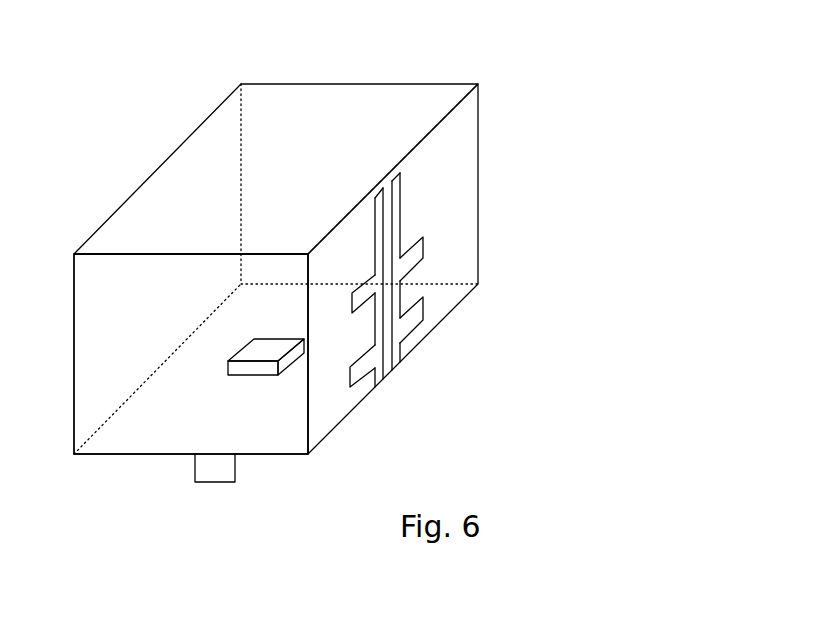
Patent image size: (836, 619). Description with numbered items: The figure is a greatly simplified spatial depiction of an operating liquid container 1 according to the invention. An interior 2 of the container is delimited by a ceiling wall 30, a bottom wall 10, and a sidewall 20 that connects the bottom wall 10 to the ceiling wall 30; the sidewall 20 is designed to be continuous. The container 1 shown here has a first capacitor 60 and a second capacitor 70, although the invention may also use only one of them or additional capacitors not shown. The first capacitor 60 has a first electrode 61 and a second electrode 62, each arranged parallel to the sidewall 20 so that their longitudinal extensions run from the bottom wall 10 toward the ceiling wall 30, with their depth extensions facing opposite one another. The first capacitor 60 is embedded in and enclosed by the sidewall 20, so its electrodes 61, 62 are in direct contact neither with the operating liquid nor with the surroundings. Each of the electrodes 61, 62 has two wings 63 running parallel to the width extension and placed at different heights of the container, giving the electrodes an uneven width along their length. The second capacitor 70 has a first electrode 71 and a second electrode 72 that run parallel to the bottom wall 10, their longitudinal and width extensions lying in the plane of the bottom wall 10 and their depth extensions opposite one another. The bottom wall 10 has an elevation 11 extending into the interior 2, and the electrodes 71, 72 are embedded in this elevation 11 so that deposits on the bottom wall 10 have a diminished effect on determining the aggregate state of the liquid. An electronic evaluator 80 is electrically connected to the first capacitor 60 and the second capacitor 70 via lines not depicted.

The operating liquid container 1 is at (596, 66).
The interior 2 is at (290, 102).
The bottom wall 10 is at (126, 443).
The elevation 11 is at (245, 368).
The sidewall 20 is at (468, 134).
The ceiling wall 30 is at (361, 101).
The first capacitor 60 is at (421, 222).
The first electrode 61 is at (400, 347).
The second electrode 62 is at (414, 327).
The wings 63 is at (419, 256).
The second capacitor 70 is at (228, 318).
The first electrode 71 is at (240, 360).
The second electrode 72 is at (283, 337).
The electronic evaluator 80 is at (210, 478).